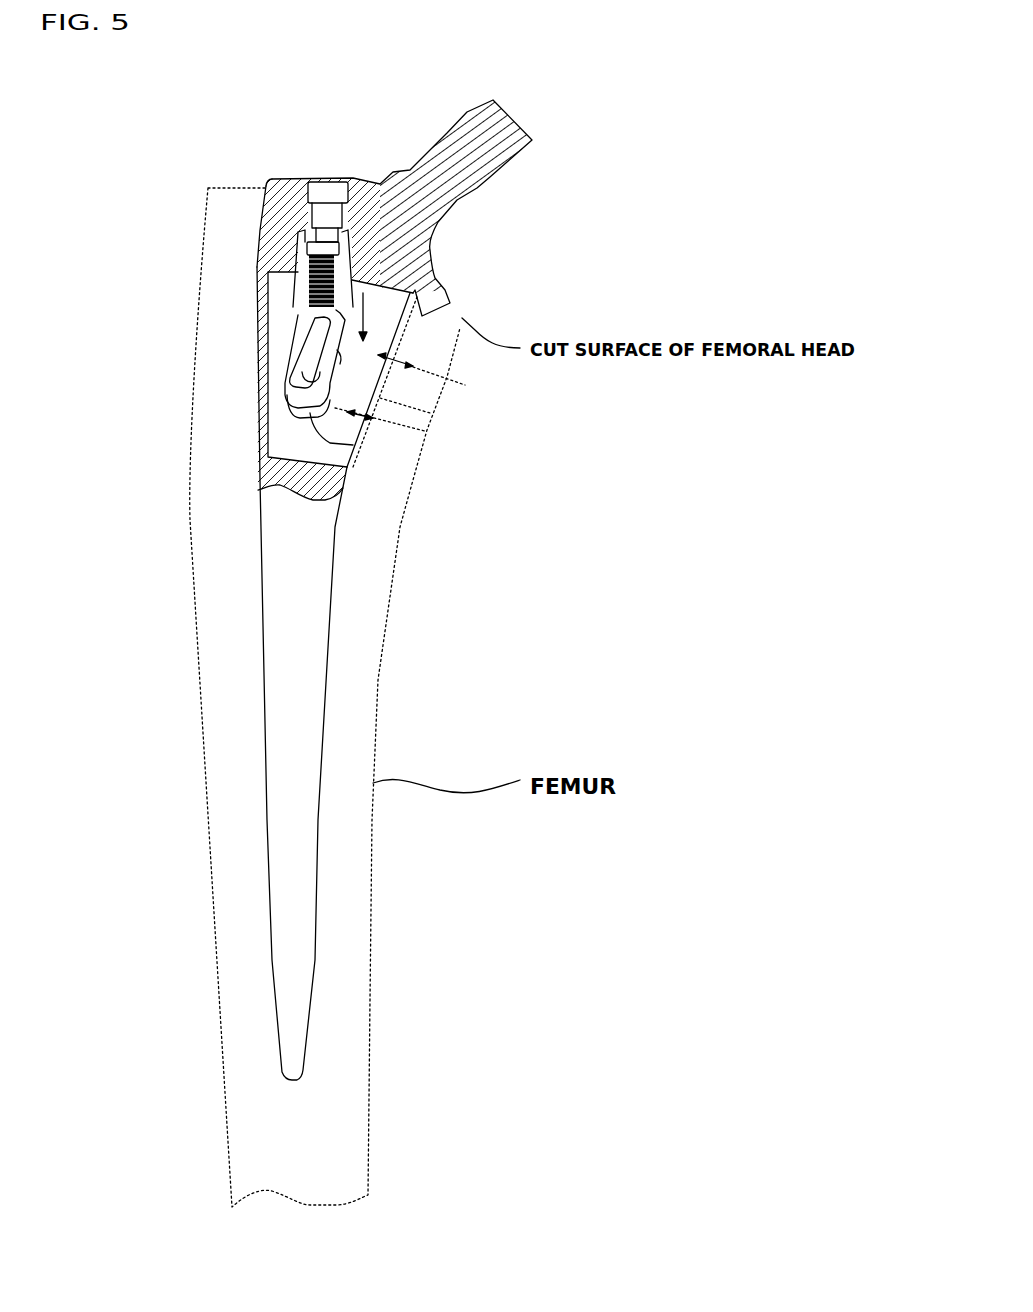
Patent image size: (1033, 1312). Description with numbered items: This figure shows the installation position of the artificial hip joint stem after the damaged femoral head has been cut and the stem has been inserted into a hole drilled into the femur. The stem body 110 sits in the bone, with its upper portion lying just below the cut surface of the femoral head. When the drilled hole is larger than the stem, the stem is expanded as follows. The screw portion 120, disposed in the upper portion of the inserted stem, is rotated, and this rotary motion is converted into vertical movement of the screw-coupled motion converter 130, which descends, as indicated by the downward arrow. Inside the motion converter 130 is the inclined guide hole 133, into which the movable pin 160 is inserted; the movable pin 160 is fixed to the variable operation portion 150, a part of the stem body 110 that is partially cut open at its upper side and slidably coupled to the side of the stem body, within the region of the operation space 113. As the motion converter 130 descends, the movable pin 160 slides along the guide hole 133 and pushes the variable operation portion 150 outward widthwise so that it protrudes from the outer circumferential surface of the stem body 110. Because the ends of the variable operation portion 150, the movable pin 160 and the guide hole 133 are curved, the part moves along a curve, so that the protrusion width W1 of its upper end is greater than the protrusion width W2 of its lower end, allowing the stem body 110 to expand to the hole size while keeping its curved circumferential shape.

The stem body 110 is at (303, 623).
The operation space 113 is at (353, 463).
The screw portion 120 is at (326, 195).
The motion converter 130 is at (296, 291).
The guide hole 133 is at (300, 312).
The movable pin 160 is at (300, 375).
The variable operation portion 150 is at (290, 442).
The protrusion width of the upper end W1 is at (419, 355).
The protrusion width of the lower end W2 is at (385, 408).